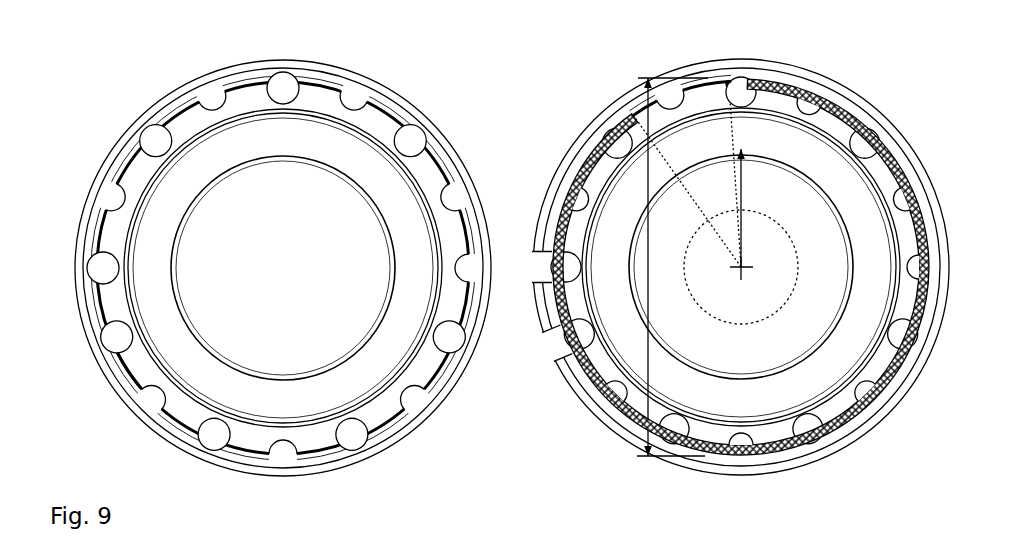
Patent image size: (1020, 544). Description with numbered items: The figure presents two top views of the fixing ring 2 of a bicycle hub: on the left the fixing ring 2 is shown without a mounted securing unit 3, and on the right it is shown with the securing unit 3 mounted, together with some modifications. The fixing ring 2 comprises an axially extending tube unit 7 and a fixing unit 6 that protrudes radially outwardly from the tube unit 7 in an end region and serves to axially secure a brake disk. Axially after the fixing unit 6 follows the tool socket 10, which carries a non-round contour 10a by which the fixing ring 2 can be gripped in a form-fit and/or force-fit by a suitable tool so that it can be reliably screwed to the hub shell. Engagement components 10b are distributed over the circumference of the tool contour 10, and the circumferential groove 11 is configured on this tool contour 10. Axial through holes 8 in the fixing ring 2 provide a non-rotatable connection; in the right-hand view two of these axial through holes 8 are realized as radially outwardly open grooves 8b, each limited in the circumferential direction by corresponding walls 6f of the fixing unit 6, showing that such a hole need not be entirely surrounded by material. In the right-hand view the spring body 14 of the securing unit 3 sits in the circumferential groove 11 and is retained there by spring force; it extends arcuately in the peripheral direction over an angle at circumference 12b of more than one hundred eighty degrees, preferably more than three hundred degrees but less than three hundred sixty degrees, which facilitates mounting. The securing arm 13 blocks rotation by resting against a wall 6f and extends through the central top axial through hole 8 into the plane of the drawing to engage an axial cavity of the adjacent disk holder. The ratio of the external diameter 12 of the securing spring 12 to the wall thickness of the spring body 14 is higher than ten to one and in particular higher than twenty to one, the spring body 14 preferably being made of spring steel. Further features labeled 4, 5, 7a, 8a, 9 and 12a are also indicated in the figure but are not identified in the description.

The fixing ring 2 is at (126, 101).
The securing unit 3 is at (855, 107).
The direction arrow 4 is at (743, 192).
The bearing center axis 5 is at (744, 268).
The fixing unit 6 is at (356, 77).
The wall 6f is at (300, 99).
The tube unit 7 is at (247, 374).
The inner ring bore 7a is at (183, 304).
The axial through hole 8 is at (284, 82).
The rolling element ball 8a is at (815, 444).
The radially outwardly open groove 8b is at (546, 270).
The rolling bearing device 9 is at (916, 94).
The tool socket 10 is at (109, 178).
The non-round contour 10a is at (115, 400).
The engagement component 10b is at (152, 396).
The circumferential groove 11 is at (185, 107).
The securing spring 12 is at (898, 160).
The cage diameter line 12a is at (648, 317).
The angle at circumference 12b is at (739, 325).
The securing arm 13 is at (726, 82).
The spring body 14 is at (586, 160).